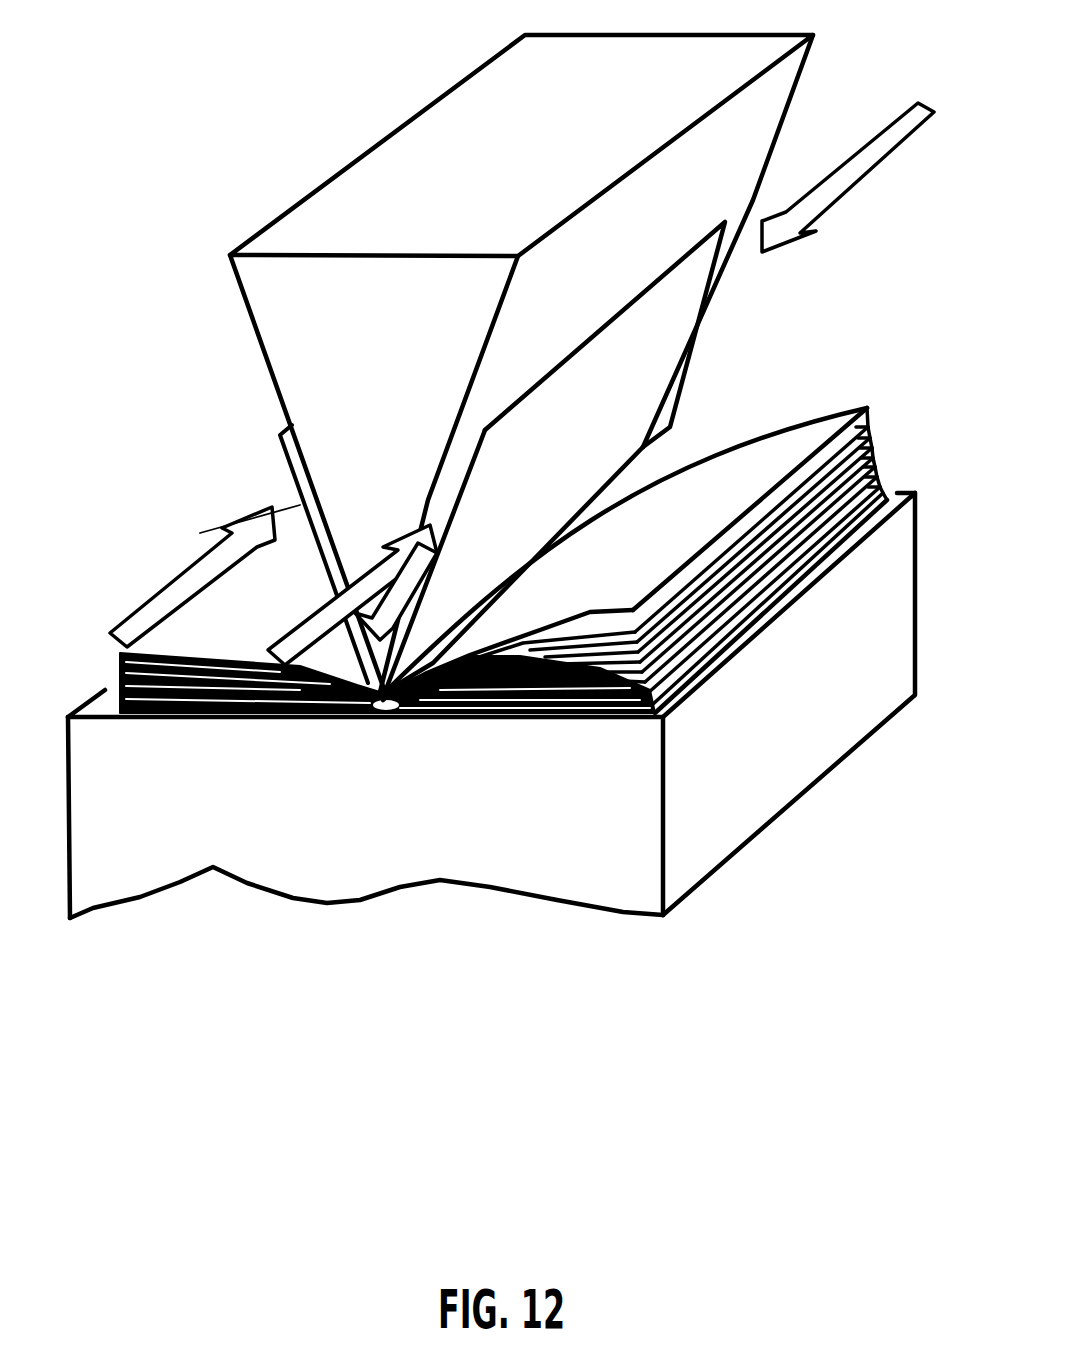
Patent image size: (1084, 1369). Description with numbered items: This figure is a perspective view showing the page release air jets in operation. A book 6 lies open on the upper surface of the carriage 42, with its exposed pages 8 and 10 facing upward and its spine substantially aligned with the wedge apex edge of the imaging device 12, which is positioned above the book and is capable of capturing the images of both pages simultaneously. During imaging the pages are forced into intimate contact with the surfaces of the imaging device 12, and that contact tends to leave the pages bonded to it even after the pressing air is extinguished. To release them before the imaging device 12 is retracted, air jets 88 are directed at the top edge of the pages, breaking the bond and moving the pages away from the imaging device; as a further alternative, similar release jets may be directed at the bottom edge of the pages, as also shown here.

The book 6 is at (877, 457).
The page 8 is at (630, 448).
The page 10 is at (298, 468).
The imaging device 12 is at (770, 110).
The carriage 42 is at (805, 730).
The air jets 88 is at (323, 617).